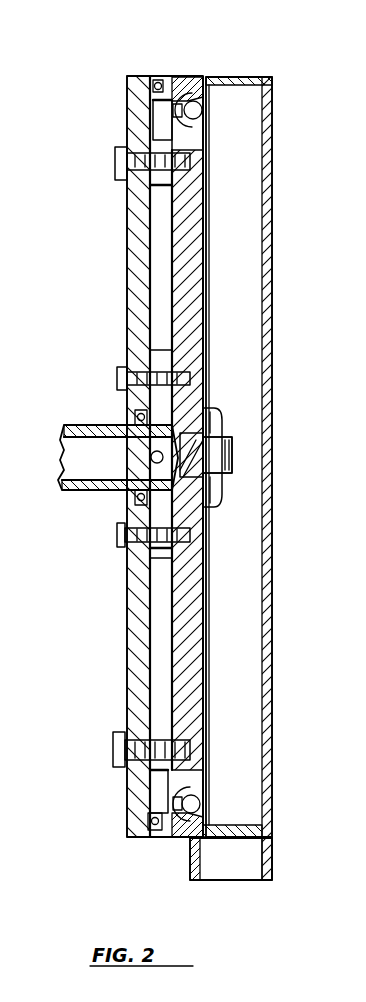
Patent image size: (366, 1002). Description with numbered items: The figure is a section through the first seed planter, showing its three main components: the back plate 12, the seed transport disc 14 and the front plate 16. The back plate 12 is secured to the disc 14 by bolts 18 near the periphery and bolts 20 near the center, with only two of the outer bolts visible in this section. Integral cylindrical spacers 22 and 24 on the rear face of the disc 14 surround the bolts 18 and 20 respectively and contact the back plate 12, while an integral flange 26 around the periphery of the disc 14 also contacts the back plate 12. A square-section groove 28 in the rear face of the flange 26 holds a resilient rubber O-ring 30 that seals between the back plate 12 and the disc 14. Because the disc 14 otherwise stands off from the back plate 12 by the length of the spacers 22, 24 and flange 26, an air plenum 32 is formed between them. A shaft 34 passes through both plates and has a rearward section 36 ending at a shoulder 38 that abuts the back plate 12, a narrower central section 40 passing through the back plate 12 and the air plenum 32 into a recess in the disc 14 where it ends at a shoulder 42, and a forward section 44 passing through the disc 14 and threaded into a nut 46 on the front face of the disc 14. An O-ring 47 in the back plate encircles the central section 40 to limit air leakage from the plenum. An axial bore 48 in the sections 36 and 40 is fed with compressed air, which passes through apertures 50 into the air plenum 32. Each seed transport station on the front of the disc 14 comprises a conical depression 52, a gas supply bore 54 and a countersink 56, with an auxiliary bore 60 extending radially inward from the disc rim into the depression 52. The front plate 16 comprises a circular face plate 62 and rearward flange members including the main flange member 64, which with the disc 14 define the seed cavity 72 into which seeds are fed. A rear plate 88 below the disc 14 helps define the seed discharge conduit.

The back plate 12 is at (140, 252).
The disc 14 is at (196, 346).
The front plate 16 is at (270, 462).
The bolts 18 is at (115, 163).
The bolts 20 is at (118, 375).
The cylindrical spacers 22 is at (160, 135).
The cylindrical spacers 24 is at (150, 350).
The flange 26 is at (175, 82).
The groove 28 is at (183, 90).
The O-ring 30 is at (153, 84).
The air plenum 32 is at (158, 635).
The shaft 34 is at (98, 459).
The rearward section 36 is at (68, 428).
The shoulder 38 is at (125, 492).
The central section 40 is at (185, 493).
The shoulder 42 is at (216, 412).
The forward section 44 is at (198, 455).
The nut 46 is at (211, 490).
The O-ring 47 is at (138, 418).
The axial bore 48 is at (135, 459).
The apertures 50 is at (182, 437).
The depression 52 is at (205, 110).
The bore 54 is at (208, 136).
The countersink 56 is at (195, 148).
The bore 60 is at (200, 80).
The face plate 62 is at (268, 250).
The main flange member 64 is at (266, 95).
The seed cavity 72 is at (246, 283).
The rear plate 88 is at (192, 860).